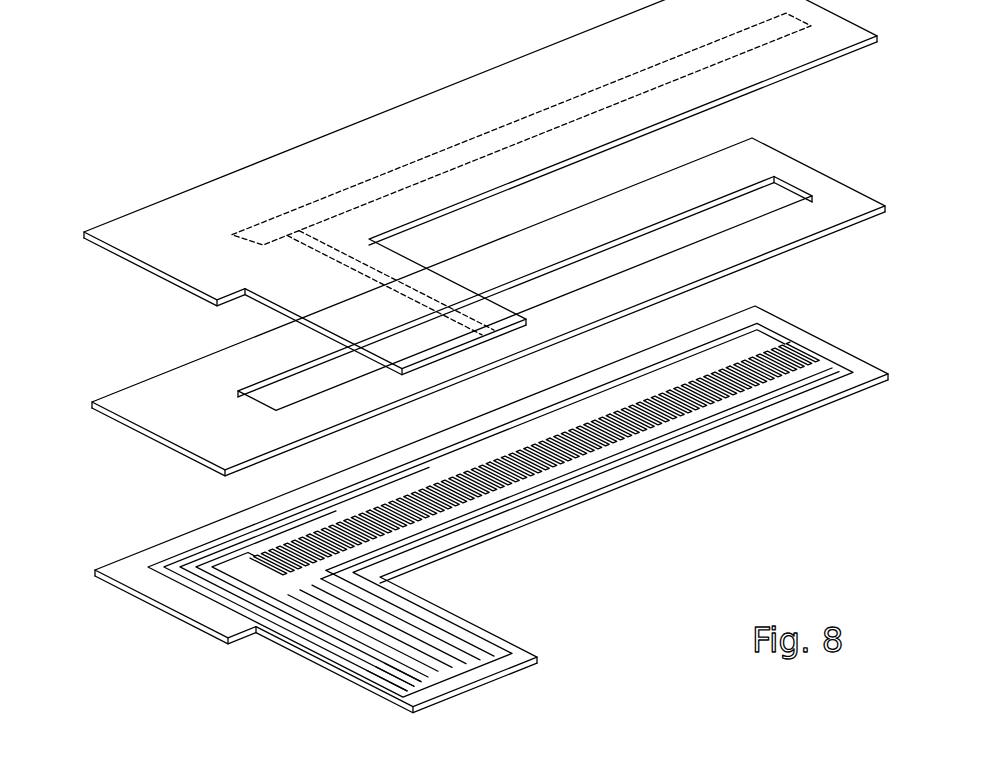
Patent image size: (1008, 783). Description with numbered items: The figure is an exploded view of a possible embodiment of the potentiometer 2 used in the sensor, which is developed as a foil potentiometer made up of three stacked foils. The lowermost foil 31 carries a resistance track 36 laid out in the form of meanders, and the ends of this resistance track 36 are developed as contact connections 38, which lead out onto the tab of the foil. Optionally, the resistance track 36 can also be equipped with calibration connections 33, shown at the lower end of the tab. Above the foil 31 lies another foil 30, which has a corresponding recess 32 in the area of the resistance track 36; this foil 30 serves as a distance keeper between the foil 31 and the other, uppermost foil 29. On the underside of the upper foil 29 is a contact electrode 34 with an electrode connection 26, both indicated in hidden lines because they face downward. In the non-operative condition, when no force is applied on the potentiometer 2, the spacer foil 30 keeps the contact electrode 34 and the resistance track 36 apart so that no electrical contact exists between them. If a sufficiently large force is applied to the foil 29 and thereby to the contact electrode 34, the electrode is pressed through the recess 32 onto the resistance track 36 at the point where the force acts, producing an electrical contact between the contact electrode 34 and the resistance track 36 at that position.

The potentiometer 2 is at (527, 365).
The electrode connection 26 is at (452, 310).
The foil 29 is at (107, 230).
The foil 30 is at (120, 402).
The foil 31 is at (120, 567).
The recess 32 is at (769, 202).
The calibration connections 33 is at (412, 662).
The contact electrode 34 is at (452, 152).
The resistance track 36 is at (662, 425).
The contact connections 38 is at (503, 645).